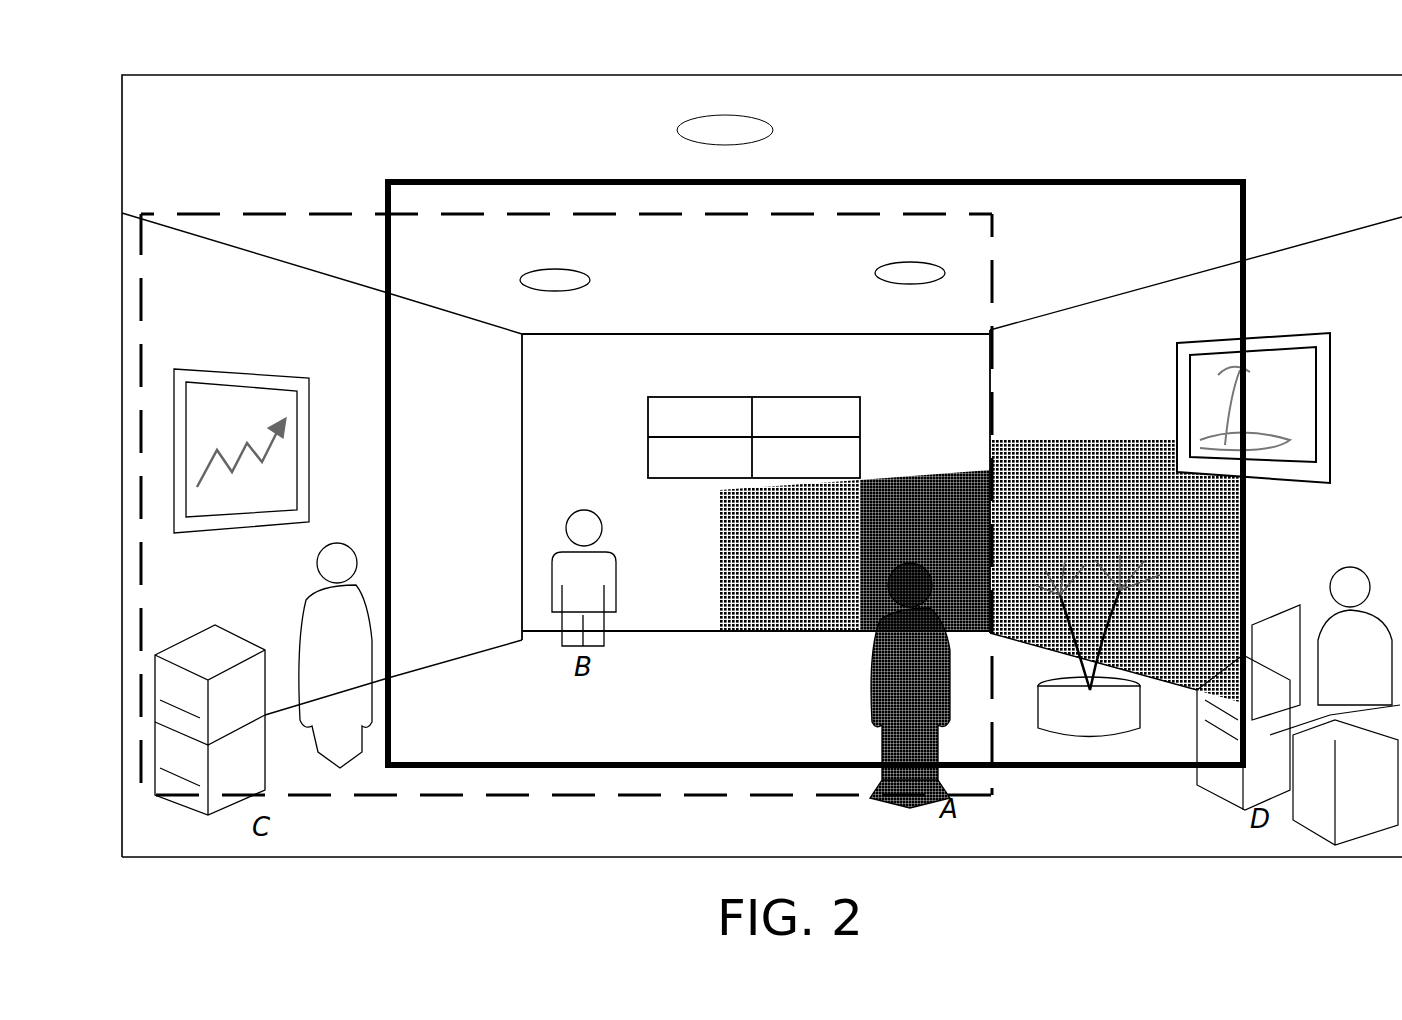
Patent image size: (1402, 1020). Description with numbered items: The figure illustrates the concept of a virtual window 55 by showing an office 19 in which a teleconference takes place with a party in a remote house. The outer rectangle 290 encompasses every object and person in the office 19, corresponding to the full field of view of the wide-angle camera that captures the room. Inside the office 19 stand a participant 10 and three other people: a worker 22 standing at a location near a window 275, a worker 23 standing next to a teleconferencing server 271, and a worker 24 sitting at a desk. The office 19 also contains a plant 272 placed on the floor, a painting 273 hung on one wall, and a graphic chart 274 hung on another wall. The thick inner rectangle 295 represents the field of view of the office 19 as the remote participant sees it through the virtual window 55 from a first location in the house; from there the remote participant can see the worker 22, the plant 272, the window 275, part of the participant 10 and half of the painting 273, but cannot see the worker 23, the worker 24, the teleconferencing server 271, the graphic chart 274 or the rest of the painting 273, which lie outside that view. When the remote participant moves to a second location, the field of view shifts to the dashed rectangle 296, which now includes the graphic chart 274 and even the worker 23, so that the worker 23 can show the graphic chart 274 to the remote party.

The office 19 is at (208, 112).
The rectangle 290 is at (1178, 75).
The rectangle 295 is at (1178, 182).
The rectangle 296 is at (345, 213).
The virtual window 55 is at (458, 170).
The graphic chart 274 is at (241, 451).
The painting 273 is at (1253, 408).
The window 275 is at (754, 454).
The teleconferencing server 271 is at (210, 720).
The worker 23 is at (335, 655).
The worker 22 is at (584, 578).
The participant 10 is at (910, 685).
The plant 272 is at (1097, 646).
The worker 24 is at (1355, 636).